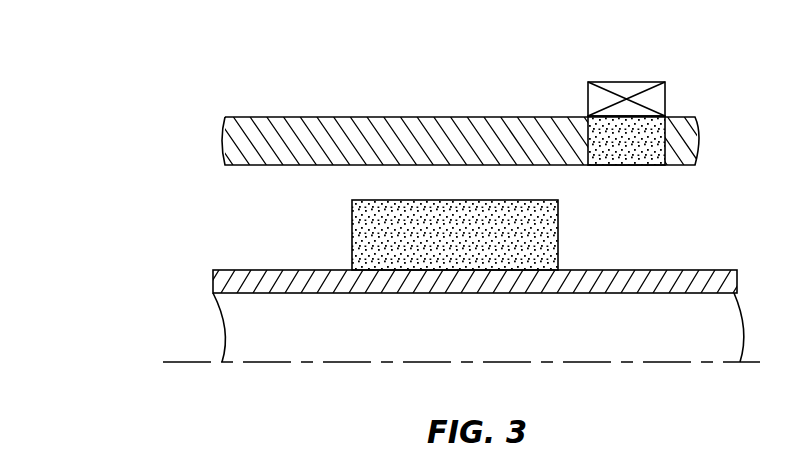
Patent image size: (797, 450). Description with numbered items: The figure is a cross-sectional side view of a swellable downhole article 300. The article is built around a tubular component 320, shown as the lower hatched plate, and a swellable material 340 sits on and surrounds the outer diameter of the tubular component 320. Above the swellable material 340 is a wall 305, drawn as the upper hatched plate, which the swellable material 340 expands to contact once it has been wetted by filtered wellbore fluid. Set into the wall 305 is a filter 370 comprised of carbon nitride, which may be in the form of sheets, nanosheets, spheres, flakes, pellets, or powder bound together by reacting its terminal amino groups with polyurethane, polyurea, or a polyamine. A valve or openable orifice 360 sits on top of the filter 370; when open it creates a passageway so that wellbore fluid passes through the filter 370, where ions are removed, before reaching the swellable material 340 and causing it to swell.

The swellable downhole article 300 is at (150, 112).
The wall 305 is at (248, 167).
The tubular component 320 is at (253, 271).
The swellable material 340 is at (365, 228).
The valve or openable orifice 360 is at (635, 81).
The filter 370 is at (618, 166).